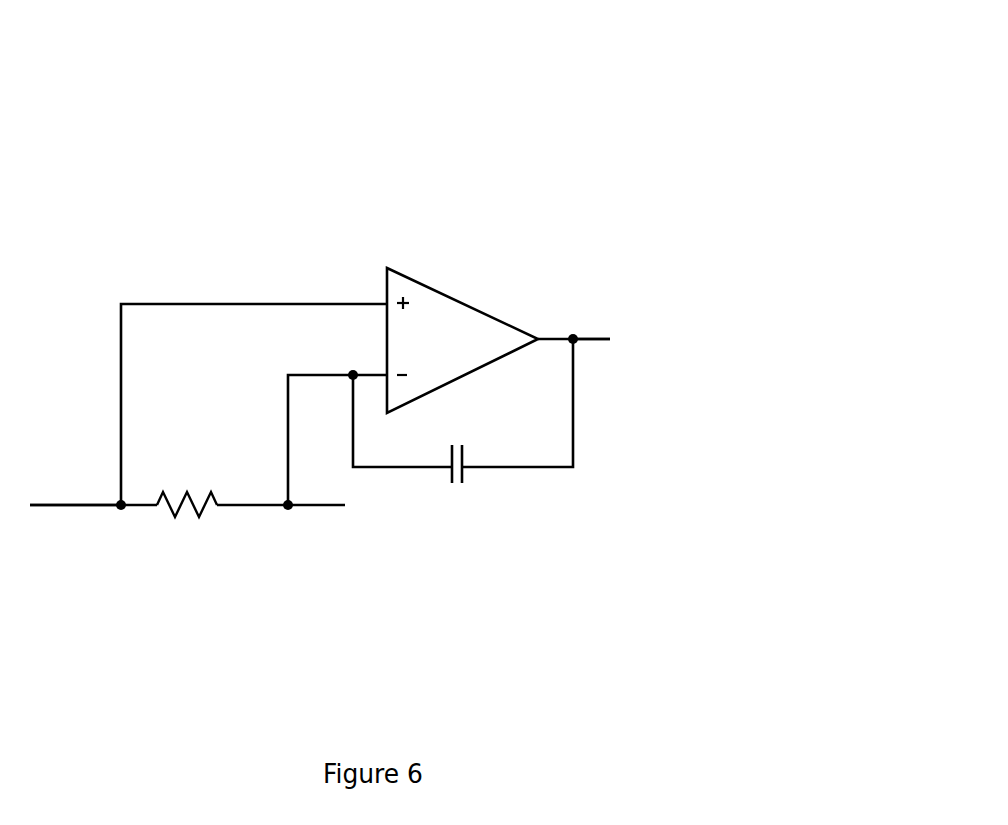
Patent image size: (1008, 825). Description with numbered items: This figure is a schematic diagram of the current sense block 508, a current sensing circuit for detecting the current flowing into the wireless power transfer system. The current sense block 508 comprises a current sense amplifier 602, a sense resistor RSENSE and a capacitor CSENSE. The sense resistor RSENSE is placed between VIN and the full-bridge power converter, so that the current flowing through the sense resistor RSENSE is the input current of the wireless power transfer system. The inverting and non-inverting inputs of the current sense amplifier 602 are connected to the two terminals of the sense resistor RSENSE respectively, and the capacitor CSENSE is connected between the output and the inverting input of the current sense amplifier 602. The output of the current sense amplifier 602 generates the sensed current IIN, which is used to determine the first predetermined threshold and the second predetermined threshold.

The current sense block 508 is at (826, 57).
The current sense amplifier 602 is at (462, 340).
The sense resistor RSENSE is at (191, 521).
The capacitor CSENSE is at (449, 481).
The element VIN is at (75, 491).
The sensed current IIN is at (592, 325).